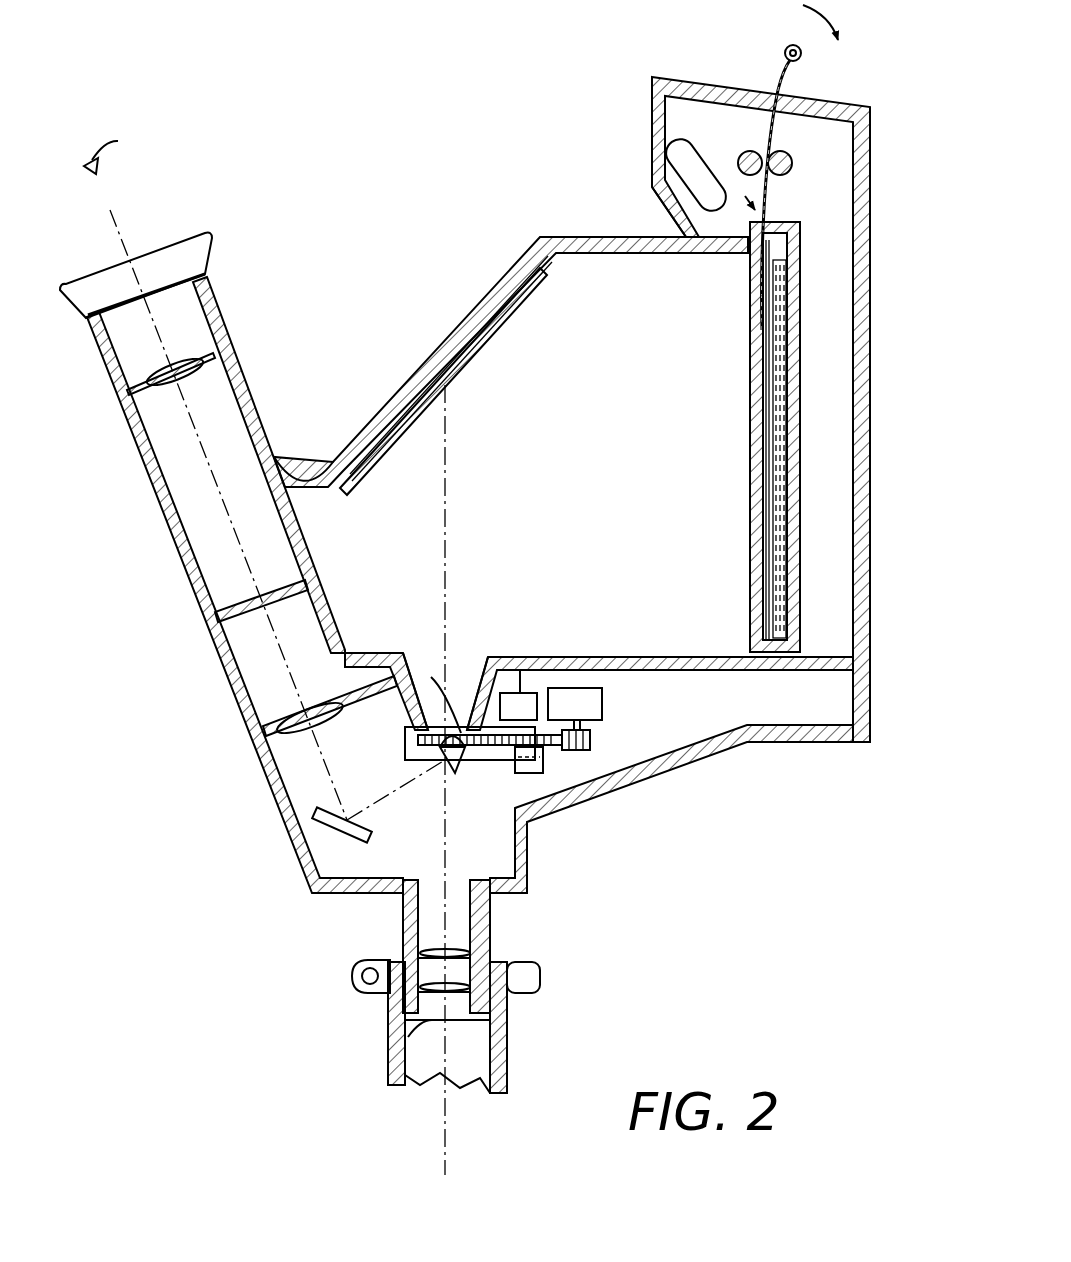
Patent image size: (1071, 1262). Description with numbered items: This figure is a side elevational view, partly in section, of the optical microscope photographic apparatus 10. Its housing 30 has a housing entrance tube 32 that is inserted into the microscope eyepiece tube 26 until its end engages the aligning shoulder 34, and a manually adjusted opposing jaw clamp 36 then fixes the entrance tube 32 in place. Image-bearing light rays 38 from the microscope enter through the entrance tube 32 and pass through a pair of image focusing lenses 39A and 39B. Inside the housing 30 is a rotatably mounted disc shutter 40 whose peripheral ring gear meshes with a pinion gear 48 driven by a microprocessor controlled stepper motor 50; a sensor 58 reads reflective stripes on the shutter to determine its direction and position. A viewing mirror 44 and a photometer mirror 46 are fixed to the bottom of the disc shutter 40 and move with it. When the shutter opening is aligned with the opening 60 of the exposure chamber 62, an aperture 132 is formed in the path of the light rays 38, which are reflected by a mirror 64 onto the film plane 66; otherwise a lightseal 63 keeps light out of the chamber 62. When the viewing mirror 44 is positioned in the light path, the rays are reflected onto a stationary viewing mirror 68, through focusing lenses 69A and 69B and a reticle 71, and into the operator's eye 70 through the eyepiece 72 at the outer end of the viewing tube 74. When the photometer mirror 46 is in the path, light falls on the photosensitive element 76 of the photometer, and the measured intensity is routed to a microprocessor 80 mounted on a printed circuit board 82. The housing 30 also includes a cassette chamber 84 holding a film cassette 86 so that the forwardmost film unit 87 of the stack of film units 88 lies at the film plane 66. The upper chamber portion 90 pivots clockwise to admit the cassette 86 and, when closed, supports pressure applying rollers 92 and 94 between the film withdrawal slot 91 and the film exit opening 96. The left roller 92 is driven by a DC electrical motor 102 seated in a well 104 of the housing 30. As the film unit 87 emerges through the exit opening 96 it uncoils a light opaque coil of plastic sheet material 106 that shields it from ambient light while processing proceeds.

The optical microscope photographic apparatus 10 is at (340, 200).
The eyepiece tube 26 is at (505, 1062).
The housing 30 is at (333, 460).
The housing entrance tube 32 is at (490, 925).
The aligning shoulder 34 is at (398, 1048).
The opposing jaw clamp 36 is at (355, 990).
The image-bearing light rays 38 is at (480, 1110).
The image focusing lens 39A is at (445, 985).
The image focusing lens 39B is at (445, 950).
The disc shutter 40 is at (412, 740).
The viewing mirror 44 is at (455, 775).
The photometer mirror 46 is at (545, 772).
The pinion gear 48 is at (592, 742).
The stepper motor 50 is at (598, 710).
The sensor 58 is at (520, 668).
The exposure chamber opening 60 is at (458, 705).
The exposure chamber 62 is at (582, 278).
The lightseal 63 is at (458, 726).
The mirror 64 is at (488, 334).
The film plane 66 is at (762, 546).
The stationary viewing mirror 68 is at (360, 838).
The focusing lens 69A is at (285, 722).
The focusing lens 69B is at (145, 372).
The eye 70 is at (115, 150).
The reticle 71 is at (245, 612).
The eyepiece 72 is at (182, 245).
The viewing tube 74 is at (150, 478).
The photosensitive element 76 is at (458, 755).
The microprocessor 80 is at (497, 283).
The printed circuit board 82 is at (421, 386).
The cassette chamber 84 is at (846, 512).
The film cassette 86 is at (803, 388).
The forwardmost film unit 87 is at (763, 336).
The stack of film units 88 is at (710, 443).
The upper chamber portion 90 is at (828, 133).
The film withdrawal slot 91 is at (737, 195).
The pressure applying roller 92 is at (750, 152).
The pressure applying roller 94 is at (778, 176).
The film exit opening 96 is at (780, 100).
The DC electrical motor 102 is at (675, 150).
The well 104 is at (677, 217).
The coil of plastic sheet material 106 is at (785, 48).
The aperture 132 is at (425, 640).